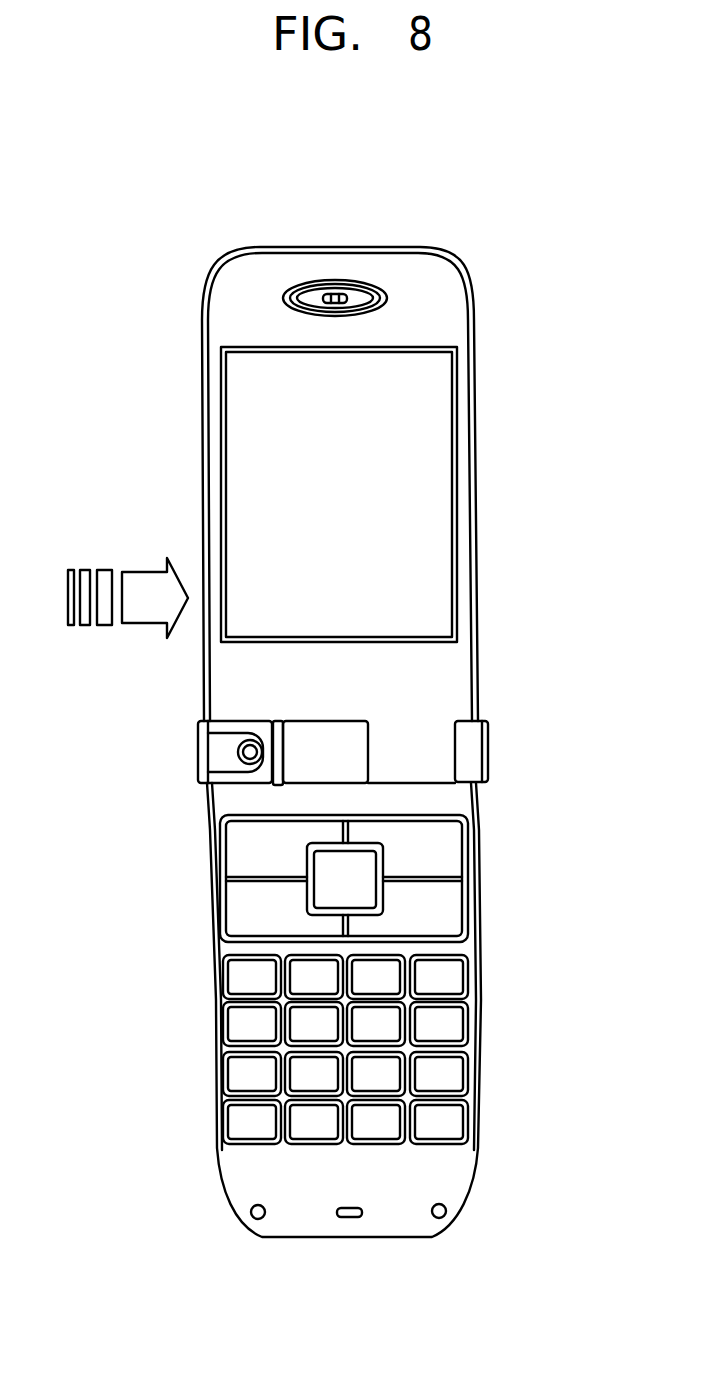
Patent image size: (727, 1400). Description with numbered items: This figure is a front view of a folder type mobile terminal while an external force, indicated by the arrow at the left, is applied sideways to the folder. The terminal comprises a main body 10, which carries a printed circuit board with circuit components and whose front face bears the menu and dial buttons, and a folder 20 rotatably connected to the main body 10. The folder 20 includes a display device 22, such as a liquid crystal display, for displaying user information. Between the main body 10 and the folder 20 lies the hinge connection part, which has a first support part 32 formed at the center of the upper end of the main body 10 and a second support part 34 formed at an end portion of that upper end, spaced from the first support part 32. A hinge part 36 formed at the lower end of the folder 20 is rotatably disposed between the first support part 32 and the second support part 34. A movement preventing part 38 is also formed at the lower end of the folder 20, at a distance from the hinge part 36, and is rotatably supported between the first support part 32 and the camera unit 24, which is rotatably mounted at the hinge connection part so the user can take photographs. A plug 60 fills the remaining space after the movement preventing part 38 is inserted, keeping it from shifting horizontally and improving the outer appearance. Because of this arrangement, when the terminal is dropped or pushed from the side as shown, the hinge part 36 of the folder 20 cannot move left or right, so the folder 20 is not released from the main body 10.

The main body 10 is at (487, 998).
The folder 20 is at (480, 343).
The display device 22 is at (438, 551).
The camera unit 24 is at (215, 748).
The first support part 32 is at (357, 733).
The second support part 34 is at (472, 733).
The hinge part 36 is at (445, 763).
The movement preventing part 38 is at (272, 733).
The plug 60 is at (287, 765).